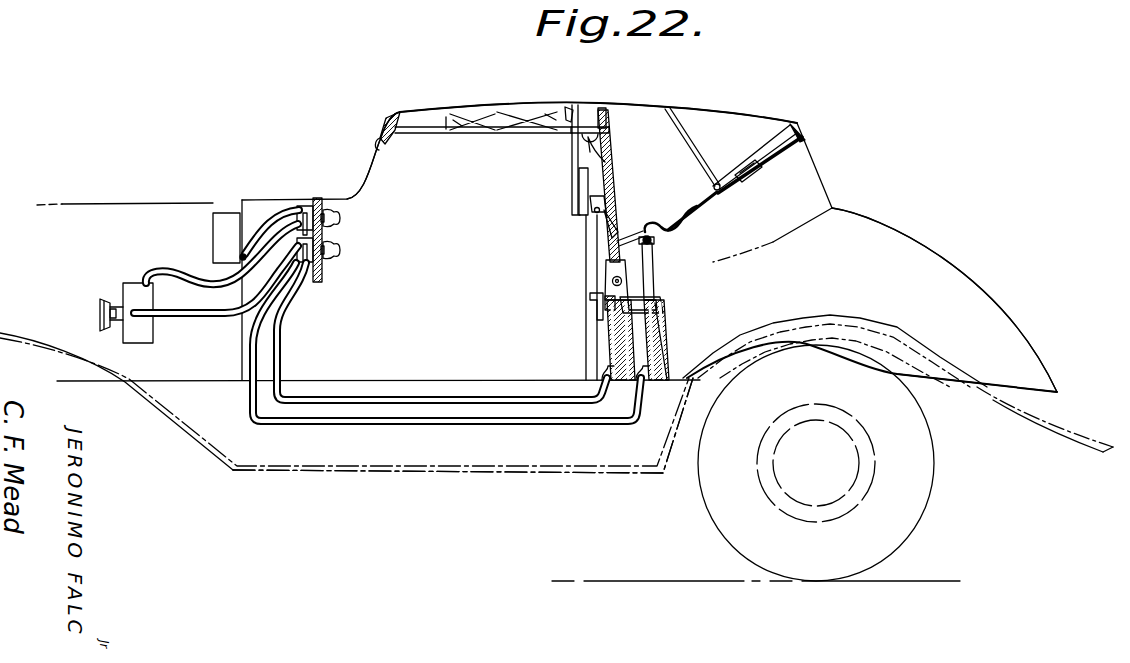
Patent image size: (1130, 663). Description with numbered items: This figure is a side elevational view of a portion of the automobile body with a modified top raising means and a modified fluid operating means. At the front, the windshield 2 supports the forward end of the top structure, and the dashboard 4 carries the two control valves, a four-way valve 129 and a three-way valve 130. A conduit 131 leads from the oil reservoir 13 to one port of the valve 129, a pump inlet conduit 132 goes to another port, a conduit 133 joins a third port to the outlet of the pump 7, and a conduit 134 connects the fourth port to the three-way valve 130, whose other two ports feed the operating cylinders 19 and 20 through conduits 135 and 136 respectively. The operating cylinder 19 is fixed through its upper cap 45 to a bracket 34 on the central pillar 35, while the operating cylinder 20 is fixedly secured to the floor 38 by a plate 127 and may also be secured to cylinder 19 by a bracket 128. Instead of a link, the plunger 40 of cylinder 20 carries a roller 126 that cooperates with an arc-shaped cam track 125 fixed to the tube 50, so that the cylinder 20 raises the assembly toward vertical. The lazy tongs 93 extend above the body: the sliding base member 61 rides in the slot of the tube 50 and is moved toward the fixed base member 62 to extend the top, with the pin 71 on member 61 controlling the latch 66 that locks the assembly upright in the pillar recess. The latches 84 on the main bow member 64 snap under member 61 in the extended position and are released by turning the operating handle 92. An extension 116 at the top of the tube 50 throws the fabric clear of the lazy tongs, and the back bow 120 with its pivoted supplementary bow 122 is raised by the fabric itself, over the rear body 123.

The windshield 2 is at (365, 145).
The dashboard 4 is at (318, 200).
The pump 7 is at (130, 290).
The oil reservoir 13 is at (220, 227).
The operating cylinder 19 is at (620, 340).
The operating cylinder 20 is at (666, 332).
The bracket 34 is at (613, 302).
The central pillar 35 is at (592, 320).
The floor 38 is at (670, 340).
The plunger 40 is at (650, 283).
The upper cap 45 is at (603, 297).
The tube 50 is at (617, 172).
The base member 61 is at (610, 156).
The base member 62 is at (590, 125).
The main bow member 64 is at (578, 158).
The latch 66 is at (592, 222).
The pin 71 is at (610, 139).
The latch 84 is at (578, 152).
The operating handle 92 is at (568, 108).
The lazy tongs linkage 93 is at (535, 131).
The extension 116 is at (603, 115).
The back bow 120 is at (722, 192).
The supplementary bow 122 is at (692, 140).
The rear body panel 123 is at (815, 176).
The arc-shaped cam track 125 is at (627, 232).
The roller 126 is at (658, 240).
The plate 127 is at (646, 412).
The bracket 128 is at (672, 312).
The four-way valve 129 is at (302, 207).
The three-way valve 130 is at (334, 262).
The conduit 131 is at (267, 217).
The pump inlet conduit 132 is at (182, 270).
The conduit 133 is at (188, 312).
The conduit 134 is at (330, 220).
The conduit 135 is at (398, 397).
The conduit 136 is at (428, 420).